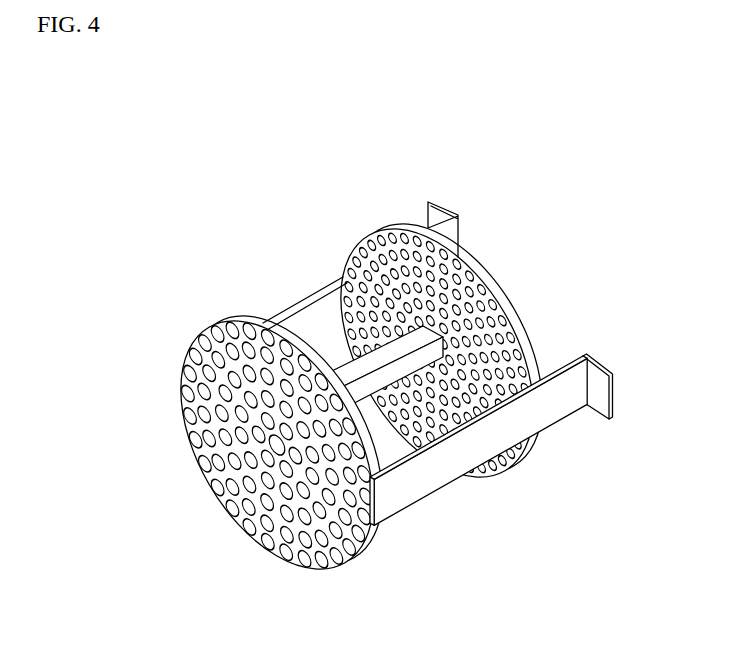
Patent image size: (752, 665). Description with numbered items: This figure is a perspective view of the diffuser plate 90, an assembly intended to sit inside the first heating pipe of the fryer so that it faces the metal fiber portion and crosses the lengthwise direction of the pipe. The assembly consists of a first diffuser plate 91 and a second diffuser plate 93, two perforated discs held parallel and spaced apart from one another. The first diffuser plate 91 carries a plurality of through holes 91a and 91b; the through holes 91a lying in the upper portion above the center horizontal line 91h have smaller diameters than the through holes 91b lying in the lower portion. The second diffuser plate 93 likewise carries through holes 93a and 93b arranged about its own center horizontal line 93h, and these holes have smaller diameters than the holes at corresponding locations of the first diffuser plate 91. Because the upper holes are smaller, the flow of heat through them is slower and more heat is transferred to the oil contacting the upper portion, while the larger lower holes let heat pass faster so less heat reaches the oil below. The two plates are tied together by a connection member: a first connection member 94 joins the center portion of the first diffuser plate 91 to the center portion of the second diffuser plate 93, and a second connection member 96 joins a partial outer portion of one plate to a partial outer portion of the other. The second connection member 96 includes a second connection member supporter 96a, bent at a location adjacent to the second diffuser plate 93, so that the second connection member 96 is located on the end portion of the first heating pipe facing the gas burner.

The diffuser plate 90 is at (395, 160).
The first diffuser plate 91 is at (250, 451).
The through holes 91a is at (186, 371).
The through holes 91b is at (265, 545).
The center horizontal line 91h is at (371, 526).
The second diffuser plate 93 is at (423, 353).
The through holes 93a is at (368, 238).
The through holes 93b is at (490, 428).
The center horizontal line 93h is at (495, 409).
The first connection member 94 is at (430, 447).
The second connection member 96 is at (472, 394).
The second connection member supporter 96a is at (449, 203).